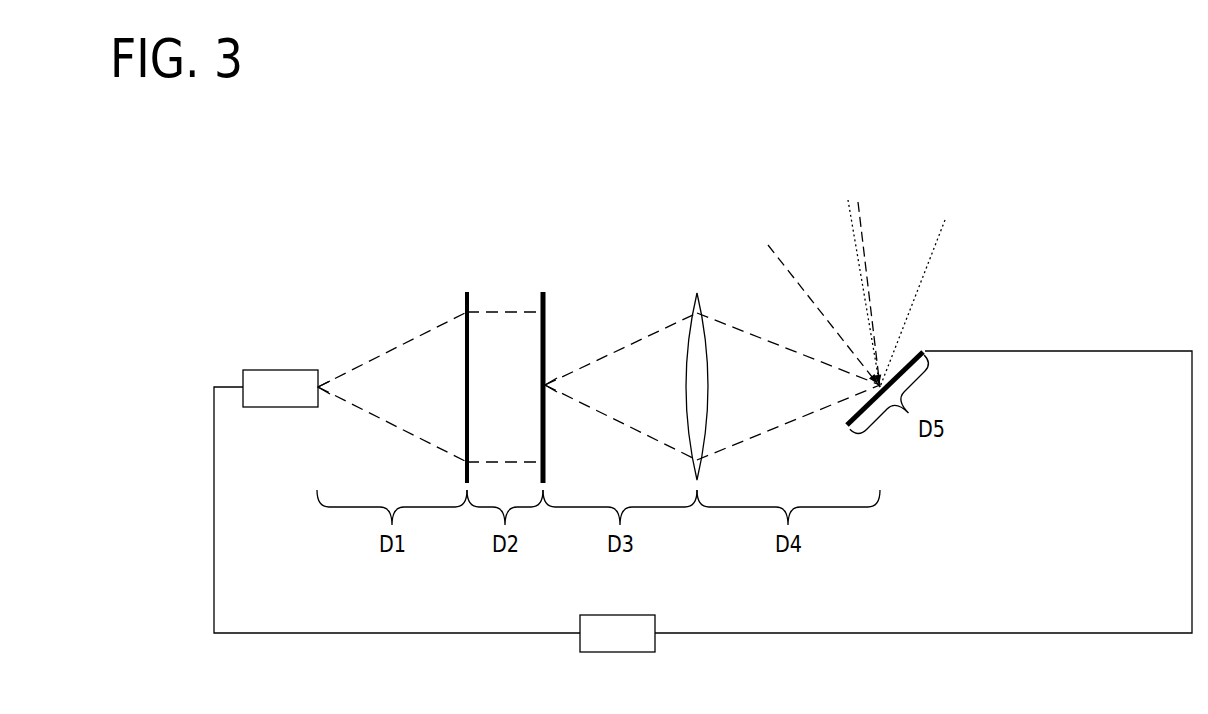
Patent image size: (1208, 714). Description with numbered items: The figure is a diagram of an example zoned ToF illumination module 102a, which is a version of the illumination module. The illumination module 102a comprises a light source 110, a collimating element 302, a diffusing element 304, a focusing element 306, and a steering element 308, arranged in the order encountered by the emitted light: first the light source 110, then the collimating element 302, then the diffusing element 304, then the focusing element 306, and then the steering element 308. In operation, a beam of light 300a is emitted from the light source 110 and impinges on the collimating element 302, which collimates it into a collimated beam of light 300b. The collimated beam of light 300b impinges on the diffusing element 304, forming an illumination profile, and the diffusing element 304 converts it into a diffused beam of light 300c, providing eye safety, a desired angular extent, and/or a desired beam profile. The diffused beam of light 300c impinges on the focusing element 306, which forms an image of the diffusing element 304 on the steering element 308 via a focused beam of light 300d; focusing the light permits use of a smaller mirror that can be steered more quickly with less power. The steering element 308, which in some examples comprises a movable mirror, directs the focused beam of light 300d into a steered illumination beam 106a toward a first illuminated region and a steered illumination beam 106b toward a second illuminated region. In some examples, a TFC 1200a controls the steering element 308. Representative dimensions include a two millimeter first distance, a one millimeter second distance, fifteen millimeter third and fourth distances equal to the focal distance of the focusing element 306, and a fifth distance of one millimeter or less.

The zoned ToF illumination module 102a is at (243, 223).
The light source 110 is at (297, 399).
The beam of light 300a is at (400, 342).
The collimated beam of light 300b is at (525, 368).
The diffused beam of light 300c is at (645, 332).
The focused beam of light 300d is at (810, 415).
The collimating element 302 is at (473, 300).
The diffusing element 304 is at (547, 300).
The focusing element 306 is at (700, 290).
The steering element 308 is at (913, 352).
The steered illumination beam 106a is at (783, 262).
The steered illumination beam 106b is at (944, 222).
The TFC 1200a is at (645, 646).